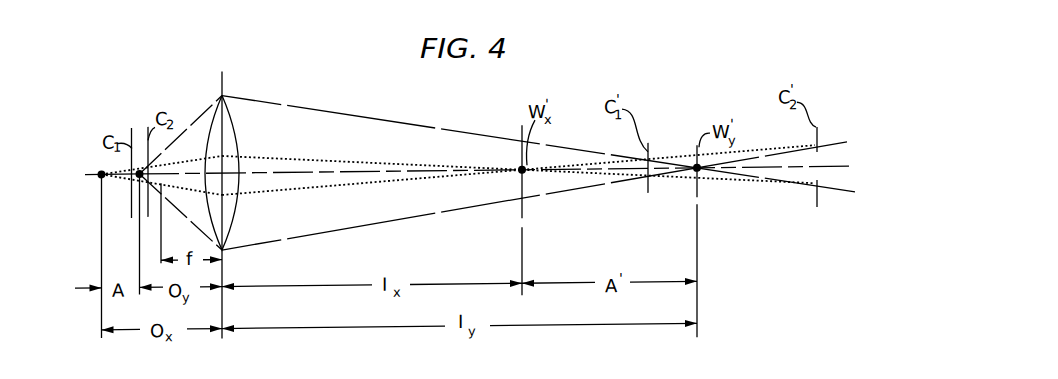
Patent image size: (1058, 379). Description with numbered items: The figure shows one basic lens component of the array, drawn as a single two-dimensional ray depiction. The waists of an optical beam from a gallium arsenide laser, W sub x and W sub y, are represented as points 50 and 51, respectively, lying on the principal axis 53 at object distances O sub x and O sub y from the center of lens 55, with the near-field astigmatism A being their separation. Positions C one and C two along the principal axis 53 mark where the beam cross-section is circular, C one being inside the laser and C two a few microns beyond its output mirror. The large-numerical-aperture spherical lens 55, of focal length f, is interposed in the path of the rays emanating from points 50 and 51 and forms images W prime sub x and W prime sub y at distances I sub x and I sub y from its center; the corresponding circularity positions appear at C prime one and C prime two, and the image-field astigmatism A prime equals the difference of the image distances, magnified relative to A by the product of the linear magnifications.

The point representing waist W_x 50 is at (100, 173).
The point representing waist W_y 51 is at (139, 173).
The principal axis 53 is at (848, 175).
The spherical lens 55 is at (234, 140).